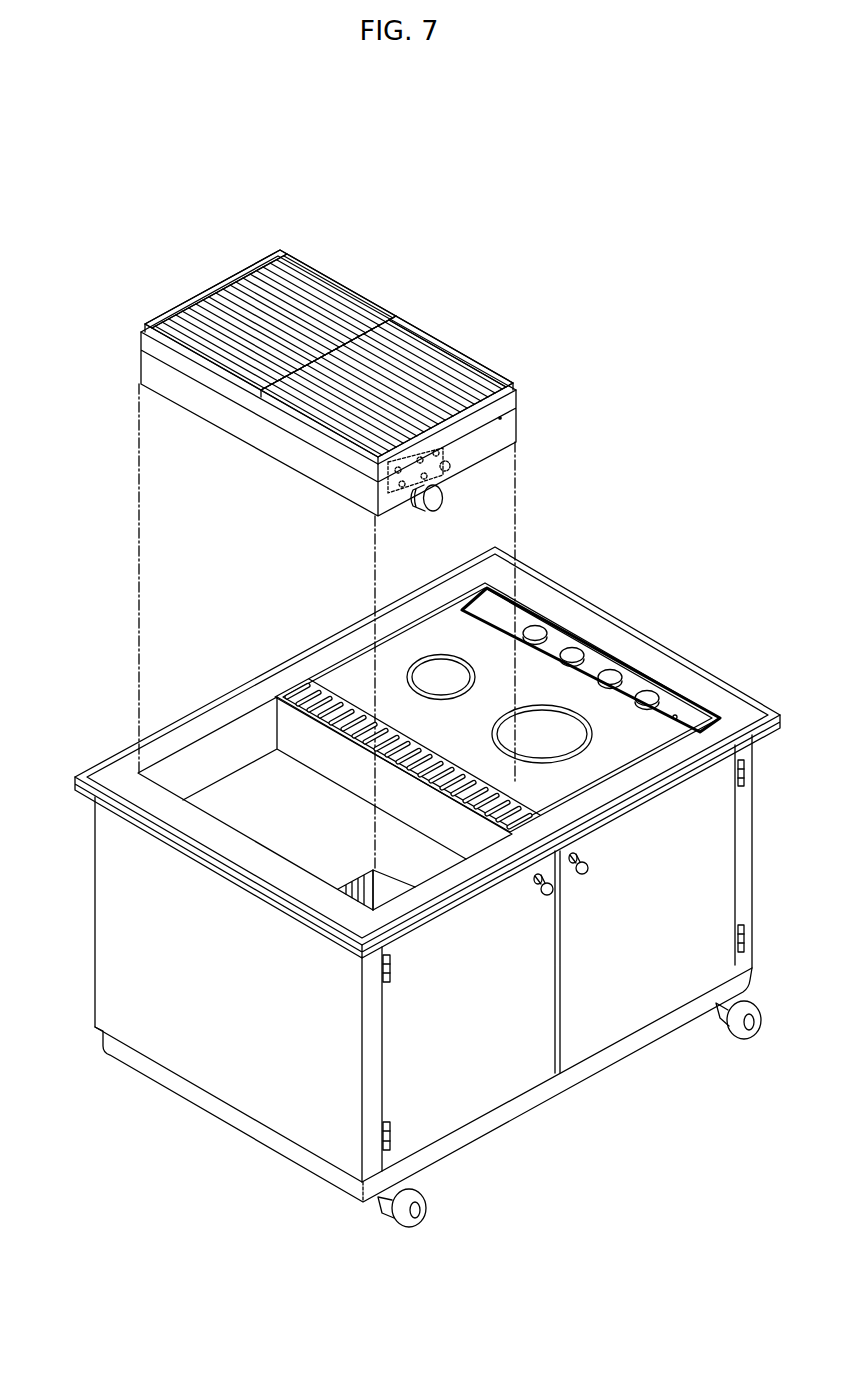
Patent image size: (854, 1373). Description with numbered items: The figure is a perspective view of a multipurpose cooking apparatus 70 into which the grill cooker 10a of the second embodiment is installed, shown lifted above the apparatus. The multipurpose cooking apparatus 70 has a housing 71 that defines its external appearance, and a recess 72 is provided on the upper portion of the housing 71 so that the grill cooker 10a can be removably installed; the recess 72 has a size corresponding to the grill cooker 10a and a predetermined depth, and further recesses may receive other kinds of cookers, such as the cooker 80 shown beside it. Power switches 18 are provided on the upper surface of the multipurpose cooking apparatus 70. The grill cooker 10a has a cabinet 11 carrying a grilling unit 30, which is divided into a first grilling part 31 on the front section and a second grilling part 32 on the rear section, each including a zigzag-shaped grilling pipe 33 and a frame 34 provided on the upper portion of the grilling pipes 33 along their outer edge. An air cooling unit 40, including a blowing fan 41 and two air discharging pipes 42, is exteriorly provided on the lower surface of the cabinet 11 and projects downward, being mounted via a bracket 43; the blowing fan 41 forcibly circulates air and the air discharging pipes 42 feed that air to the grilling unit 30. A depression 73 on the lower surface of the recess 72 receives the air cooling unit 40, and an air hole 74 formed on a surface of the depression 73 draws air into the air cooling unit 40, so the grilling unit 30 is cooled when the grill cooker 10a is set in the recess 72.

The grill cooker 10a is at (430, 160).
The cabinet 11 is at (247, 430).
The power switches 18 is at (620, 665).
The grilling unit 30 is at (423, 224).
The first grilling part 31 is at (362, 279).
The second grilling part 32 is at (445, 328).
The grilling pipe 33 is at (237, 298).
The frame 34 is at (313, 276).
The air cooling unit 40 is at (390, 531).
The blowing fan 41 is at (393, 490).
The air discharging pipes 42 is at (403, 505).
The bracket 43 is at (452, 470).
The multipurpose cooking apparatus 70 is at (647, 621).
The housing 71 is at (128, 920).
The recess 72 is at (205, 752).
The depression 73 is at (388, 886).
The air hole 74 is at (352, 906).
The cooker 80 is at (541, 680).